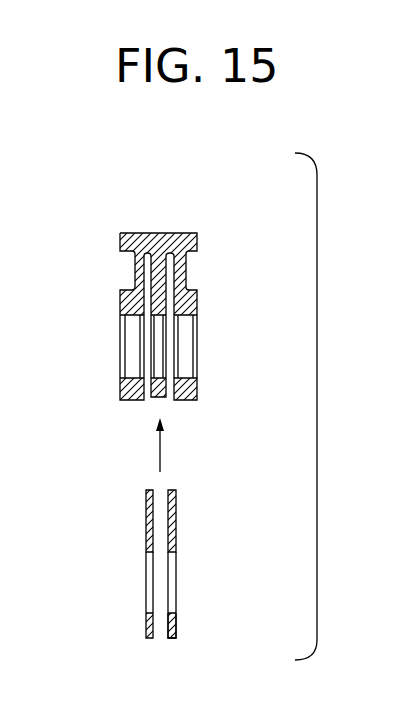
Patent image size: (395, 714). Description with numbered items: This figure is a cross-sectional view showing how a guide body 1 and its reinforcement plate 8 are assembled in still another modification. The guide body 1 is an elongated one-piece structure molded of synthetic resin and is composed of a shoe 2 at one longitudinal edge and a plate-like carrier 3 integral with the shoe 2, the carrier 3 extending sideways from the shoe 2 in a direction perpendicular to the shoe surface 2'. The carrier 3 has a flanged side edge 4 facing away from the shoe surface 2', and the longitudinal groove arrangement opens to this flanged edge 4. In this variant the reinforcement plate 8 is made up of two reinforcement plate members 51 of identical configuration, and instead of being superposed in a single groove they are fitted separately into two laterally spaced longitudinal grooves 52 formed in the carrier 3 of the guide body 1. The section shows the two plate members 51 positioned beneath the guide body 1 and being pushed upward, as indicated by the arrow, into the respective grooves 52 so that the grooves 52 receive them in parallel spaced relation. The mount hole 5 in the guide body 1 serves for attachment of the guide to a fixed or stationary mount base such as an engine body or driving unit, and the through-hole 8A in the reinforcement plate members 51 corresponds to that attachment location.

The guide body 1 is at (156, 292).
The shoe 2 is at (119, 234).
The shoe surface 2' is at (143, 248).
The carrier 3 is at (135, 265).
The longitudinal groove 52 is at (136, 287).
The mount hole 5 is at (188, 375).
The flanged side edge 4 is at (196, 390).
The reinforcement plate 8 is at (170, 549).
The reinforcement plate member 51 is at (147, 512).
The through-hole 8A is at (172, 614).